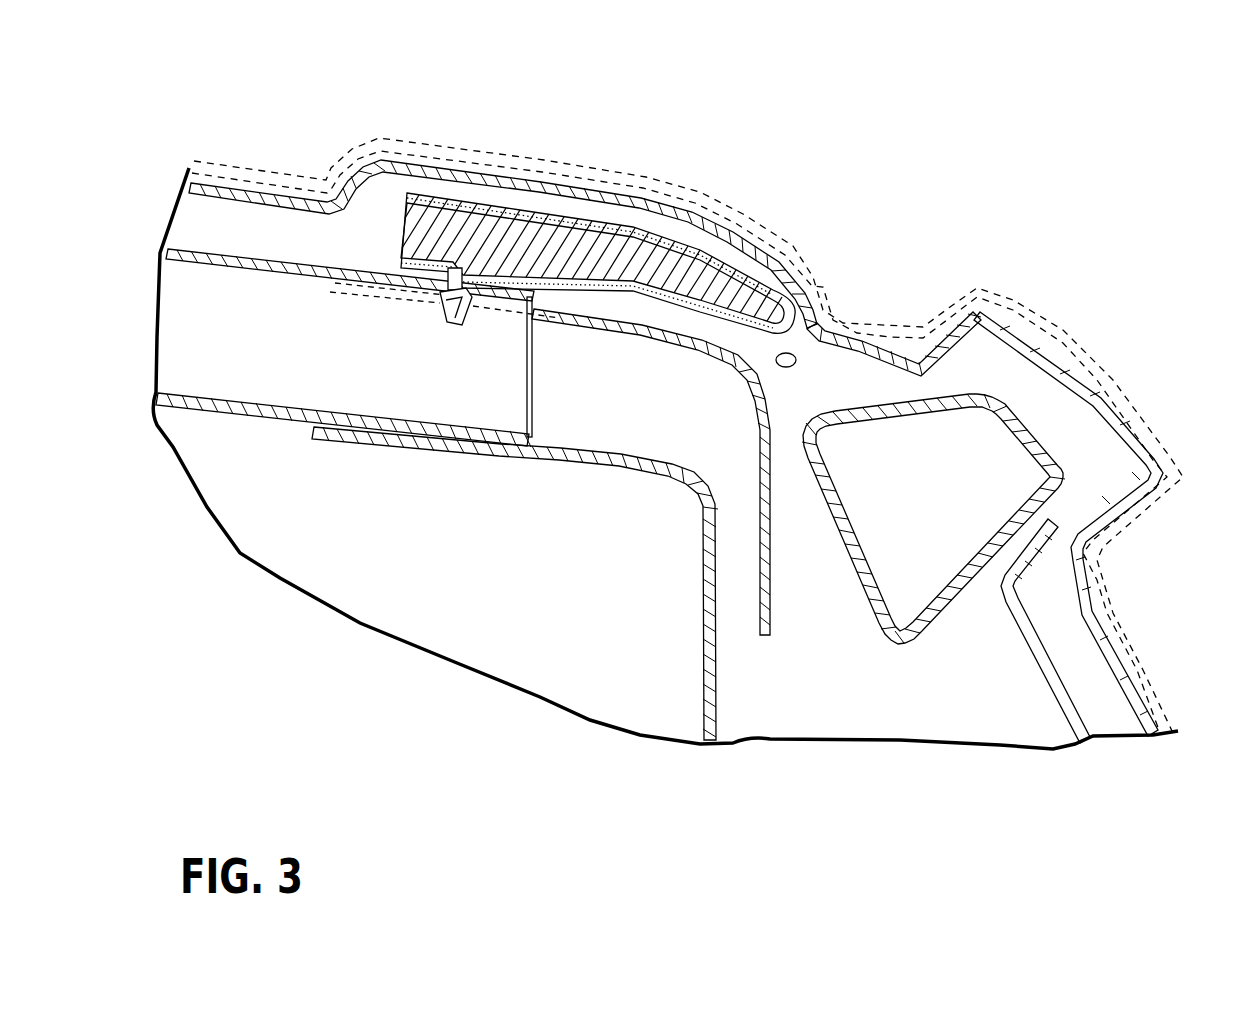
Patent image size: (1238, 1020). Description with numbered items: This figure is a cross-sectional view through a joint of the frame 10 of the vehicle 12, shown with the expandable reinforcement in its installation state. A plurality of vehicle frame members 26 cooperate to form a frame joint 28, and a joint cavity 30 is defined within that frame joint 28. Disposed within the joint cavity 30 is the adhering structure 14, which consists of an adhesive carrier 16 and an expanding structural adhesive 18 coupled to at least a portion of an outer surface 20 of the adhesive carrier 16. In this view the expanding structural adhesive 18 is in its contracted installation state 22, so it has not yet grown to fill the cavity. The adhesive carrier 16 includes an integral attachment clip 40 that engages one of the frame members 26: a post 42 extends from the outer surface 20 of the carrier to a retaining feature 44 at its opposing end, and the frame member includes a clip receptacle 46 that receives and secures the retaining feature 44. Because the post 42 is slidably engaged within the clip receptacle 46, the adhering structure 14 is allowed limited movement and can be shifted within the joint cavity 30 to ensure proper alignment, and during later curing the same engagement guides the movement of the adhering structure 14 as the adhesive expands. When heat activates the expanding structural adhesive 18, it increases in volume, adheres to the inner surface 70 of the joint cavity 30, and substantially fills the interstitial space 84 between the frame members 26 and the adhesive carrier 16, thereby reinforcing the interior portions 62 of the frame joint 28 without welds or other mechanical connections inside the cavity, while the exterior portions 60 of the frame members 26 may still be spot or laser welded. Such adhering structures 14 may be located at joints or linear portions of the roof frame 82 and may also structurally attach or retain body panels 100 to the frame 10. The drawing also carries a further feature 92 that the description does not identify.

The frame 10 is at (997, 203).
The vehicle 12 is at (205, 122).
The adhering structure 14 is at (462, 197).
The adhesive carrier 16 is at (592, 253).
The expanding structural adhesive 18 is at (717, 225).
The outer surface 20 is at (403, 230).
The contracted installation state 22 is at (503, 200).
The vehicle frame members 26 is at (803, 270).
The frame joint 28 is at (492, 293).
The joint cavity 30 is at (618, 318).
The attachment clip 40 is at (428, 310).
The post 42 is at (470, 300).
The retaining feature 44 is at (448, 323).
The clip receptacle 46 is at (403, 273).
The exterior portions 60 is at (867, 340).
The interior portions 62 is at (796, 368).
The inner surface 70 is at (545, 197).
The roof frame 82 is at (1095, 350).
The interstitial space 84 is at (422, 193).
The trim panel 92 is at (1130, 687).
The body panels 100 is at (680, 193).